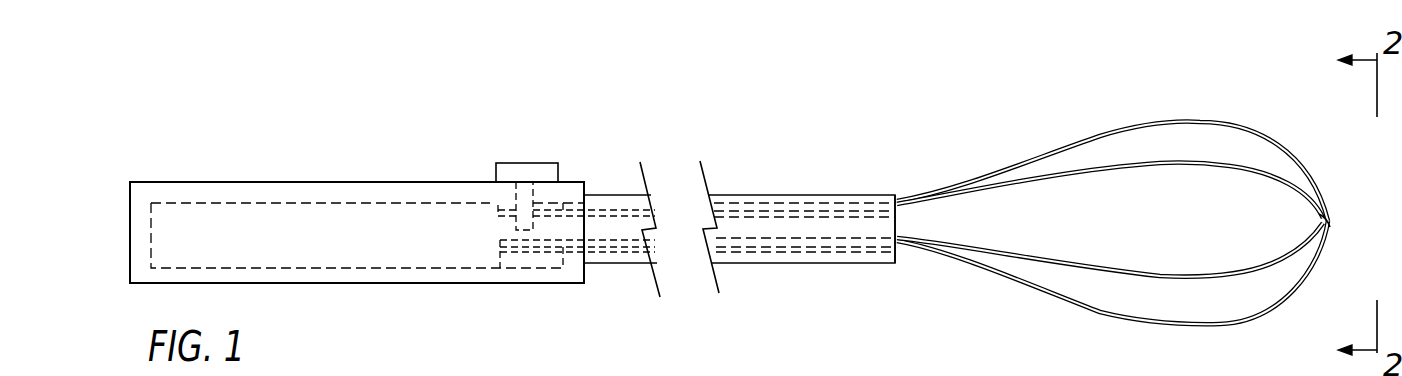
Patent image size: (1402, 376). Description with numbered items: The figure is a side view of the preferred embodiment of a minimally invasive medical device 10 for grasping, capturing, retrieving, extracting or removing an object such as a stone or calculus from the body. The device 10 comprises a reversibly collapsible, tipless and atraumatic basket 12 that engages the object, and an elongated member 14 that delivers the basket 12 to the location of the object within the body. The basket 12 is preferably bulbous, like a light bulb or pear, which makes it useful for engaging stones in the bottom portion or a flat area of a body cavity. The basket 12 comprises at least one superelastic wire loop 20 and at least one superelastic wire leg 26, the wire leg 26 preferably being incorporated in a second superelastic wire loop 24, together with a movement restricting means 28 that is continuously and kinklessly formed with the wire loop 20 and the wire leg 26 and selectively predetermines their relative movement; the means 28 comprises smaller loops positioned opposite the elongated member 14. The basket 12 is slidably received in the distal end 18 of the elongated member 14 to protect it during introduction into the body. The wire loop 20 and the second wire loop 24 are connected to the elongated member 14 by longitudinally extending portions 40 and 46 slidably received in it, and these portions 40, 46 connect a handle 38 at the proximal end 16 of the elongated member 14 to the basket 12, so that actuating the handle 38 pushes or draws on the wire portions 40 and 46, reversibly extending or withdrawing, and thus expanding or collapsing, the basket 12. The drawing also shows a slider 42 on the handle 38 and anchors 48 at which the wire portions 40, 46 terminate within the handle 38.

The device 10 is at (411, 99).
The basket 12 is at (1136, 195).
The elongated member 14 is at (786, 184).
The proximal end 16 is at (598, 264).
The distal end 18 is at (880, 264).
The superelastic wire loop 20 is at (1037, 292).
The second superelastic wire loop 24 is at (1092, 139).
The superelastic wire leg 26 is at (1196, 120).
The movement restricting means 28 is at (1333, 218).
The handle 38 is at (216, 218).
The longitudinally extending portion 40 is at (826, 203).
The slider actuator 42 is at (562, 240).
The longitudinally extending portion 46 is at (782, 247).
The wire anchors 48 is at (500, 245).